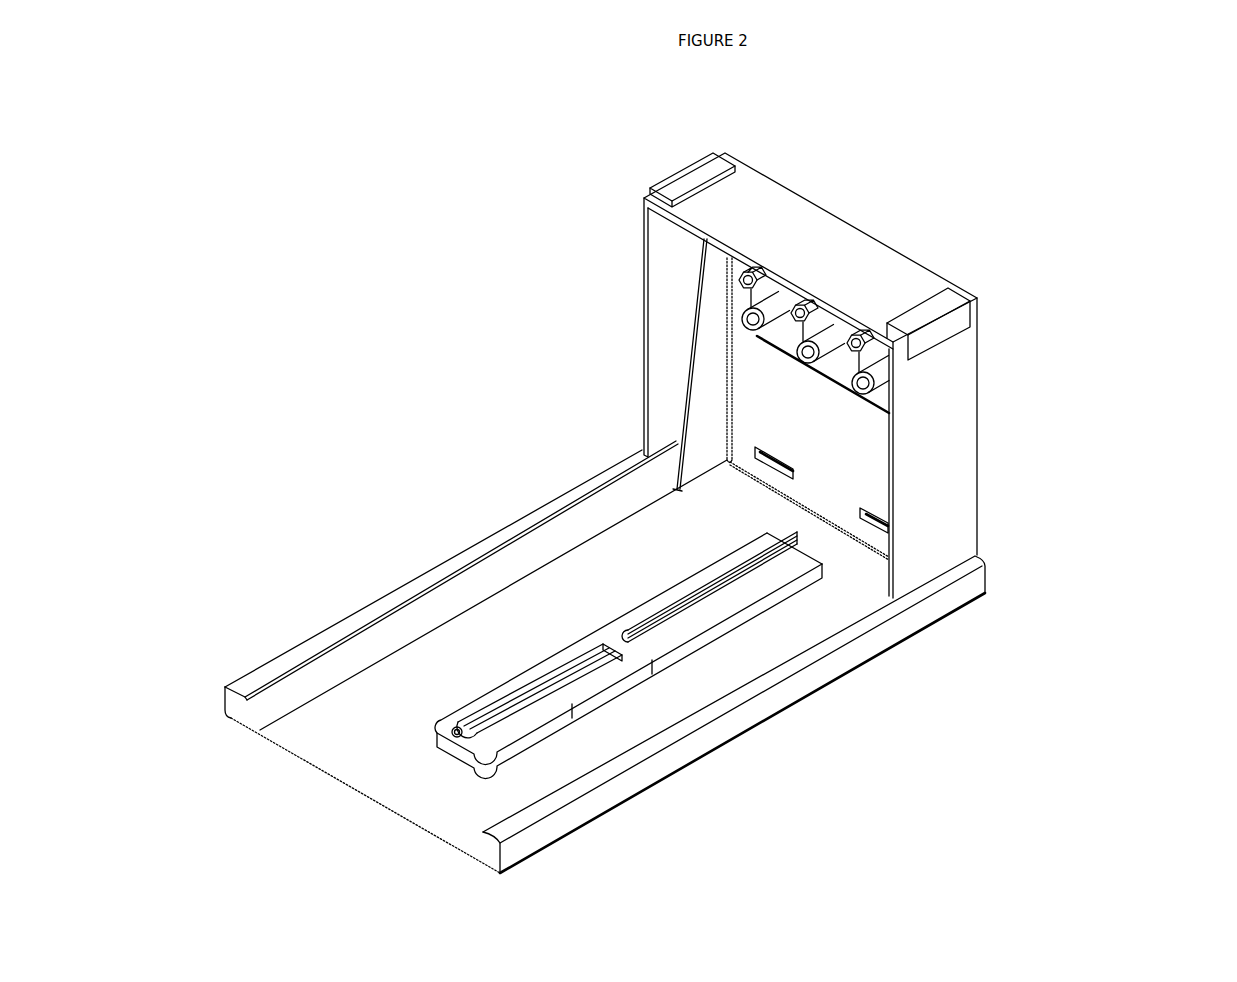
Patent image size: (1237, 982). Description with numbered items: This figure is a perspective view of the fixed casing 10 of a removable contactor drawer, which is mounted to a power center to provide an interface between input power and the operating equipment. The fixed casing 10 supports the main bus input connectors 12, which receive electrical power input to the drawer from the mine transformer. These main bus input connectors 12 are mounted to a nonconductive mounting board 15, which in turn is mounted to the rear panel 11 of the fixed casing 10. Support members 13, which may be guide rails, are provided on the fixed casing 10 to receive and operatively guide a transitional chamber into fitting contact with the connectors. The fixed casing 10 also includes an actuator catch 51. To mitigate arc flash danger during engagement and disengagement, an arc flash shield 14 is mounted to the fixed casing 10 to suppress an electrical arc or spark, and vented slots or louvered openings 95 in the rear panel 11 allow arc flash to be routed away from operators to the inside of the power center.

The fixed casing 10 is at (640, 220).
The rear panel 11 is at (790, 402).
The main bus input connectors 12 is at (733, 311).
The support members 13 is at (767, 733).
The arc flash shield 14 is at (990, 343).
The nonconductive mounting board 15 is at (790, 347).
The actuator catch 51 is at (480, 748).
The vented slots or louvered openings 95 is at (757, 447).